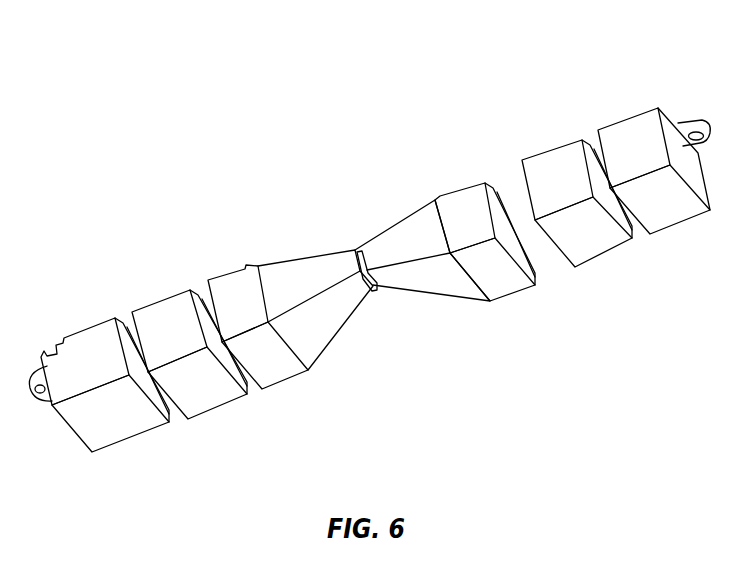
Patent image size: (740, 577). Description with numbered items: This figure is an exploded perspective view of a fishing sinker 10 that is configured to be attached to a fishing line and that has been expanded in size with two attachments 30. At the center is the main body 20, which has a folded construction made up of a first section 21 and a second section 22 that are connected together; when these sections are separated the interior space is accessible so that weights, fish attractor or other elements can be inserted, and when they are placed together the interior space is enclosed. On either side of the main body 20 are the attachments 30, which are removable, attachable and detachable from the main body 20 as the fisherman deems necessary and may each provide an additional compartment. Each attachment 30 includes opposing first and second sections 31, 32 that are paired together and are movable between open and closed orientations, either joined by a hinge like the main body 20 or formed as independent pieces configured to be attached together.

The sinker 10 is at (292, 153).
The main body 20 is at (312, 340).
The first section 21 is at (443, 283).
The second section 22 is at (343, 313).
The attachment 30 is at (112, 418).
The first section 31 is at (562, 172).
The second section 32 is at (92, 347).